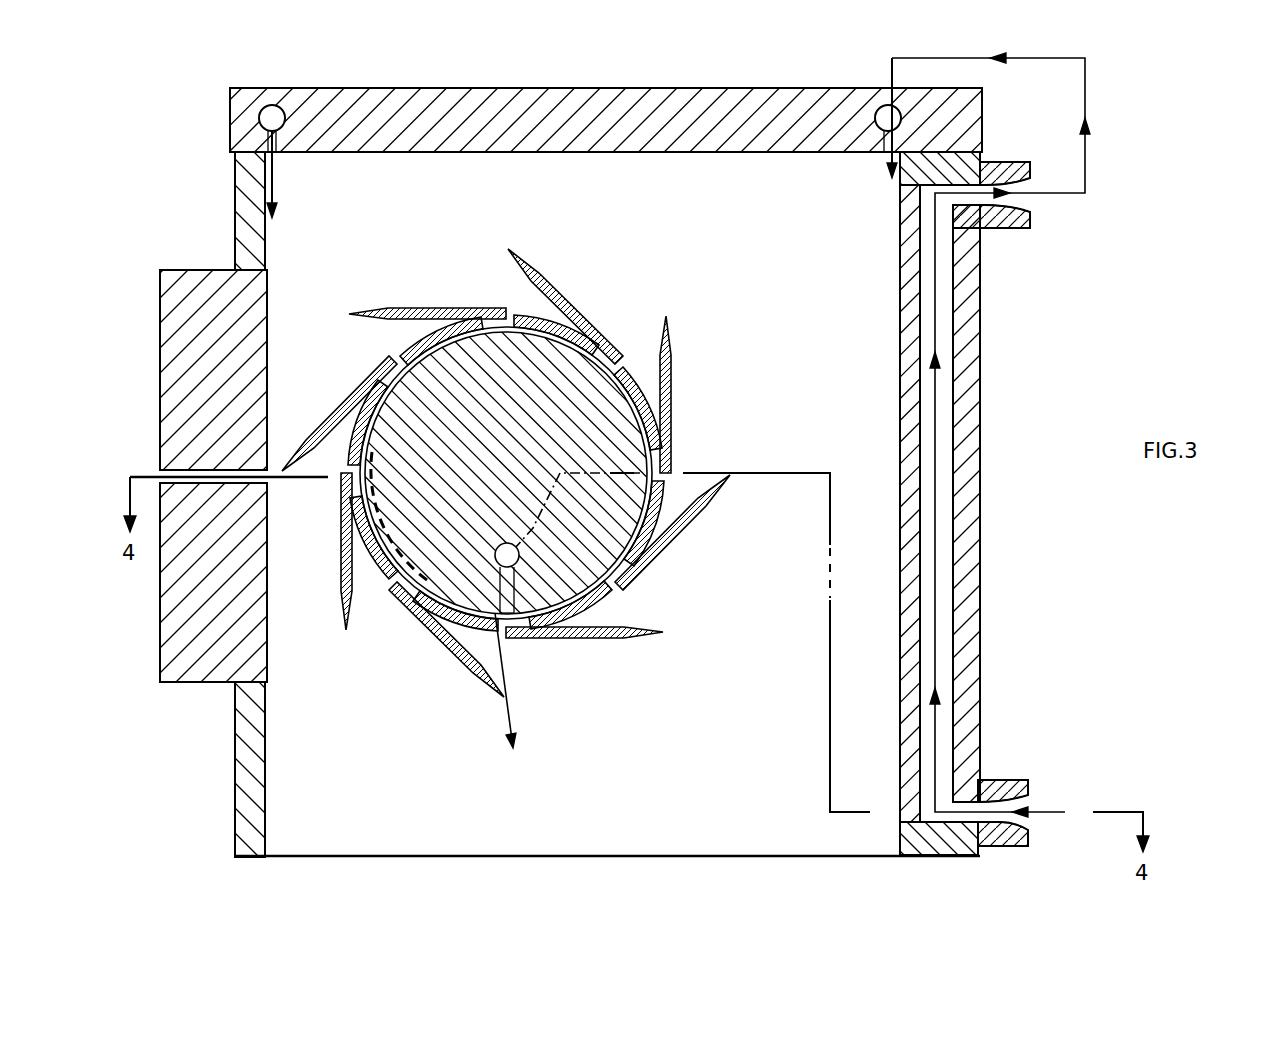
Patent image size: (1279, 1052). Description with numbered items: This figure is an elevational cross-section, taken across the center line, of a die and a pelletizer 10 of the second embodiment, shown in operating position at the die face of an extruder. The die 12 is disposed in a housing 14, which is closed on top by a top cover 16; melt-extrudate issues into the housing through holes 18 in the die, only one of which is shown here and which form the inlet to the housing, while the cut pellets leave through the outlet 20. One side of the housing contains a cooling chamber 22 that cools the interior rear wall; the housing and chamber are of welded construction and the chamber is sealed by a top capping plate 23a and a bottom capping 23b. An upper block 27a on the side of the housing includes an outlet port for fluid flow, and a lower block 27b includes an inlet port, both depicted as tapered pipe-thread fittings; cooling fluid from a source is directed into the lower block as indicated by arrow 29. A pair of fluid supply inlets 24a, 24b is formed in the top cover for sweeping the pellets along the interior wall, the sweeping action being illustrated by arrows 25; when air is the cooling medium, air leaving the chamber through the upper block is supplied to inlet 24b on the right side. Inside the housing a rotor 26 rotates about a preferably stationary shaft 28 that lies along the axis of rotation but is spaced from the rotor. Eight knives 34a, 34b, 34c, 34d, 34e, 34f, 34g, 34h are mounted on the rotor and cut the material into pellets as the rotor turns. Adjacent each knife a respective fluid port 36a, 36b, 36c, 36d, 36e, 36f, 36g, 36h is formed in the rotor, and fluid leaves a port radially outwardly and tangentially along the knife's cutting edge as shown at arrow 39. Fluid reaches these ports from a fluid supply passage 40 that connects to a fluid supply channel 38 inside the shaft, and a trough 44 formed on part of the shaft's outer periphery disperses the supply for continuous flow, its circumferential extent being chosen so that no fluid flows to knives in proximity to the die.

The pelletizer 10 is at (1203, 106).
The die 12 is at (175, 685).
The housing 14 is at (235, 185).
The top cover 16 is at (478, 88).
The holes 18 is at (165, 470).
The outlet 20 is at (478, 858).
The cooling chamber 22 is at (985, 505).
The top capping plate 23a is at (990, 165).
The bottom capping 23b is at (975, 852).
The fluid supply inlet 24a is at (272, 105).
The fluid supply inlet 24b is at (880, 108).
The arrows 25 is at (278, 170).
The rotor 26 is at (535, 410).
The block 27a is at (1000, 230).
The block 27b is at (1000, 780).
The shaft 28 is at (583, 340).
The arrow 29 is at (1060, 810).
The knife 34a is at (350, 625).
The knife 34b is at (480, 690).
The knife 34c is at (600, 640).
The knife 34d is at (670, 540).
The knife 34e is at (672, 360).
The knife 34f is at (530, 262).
The knife 34g is at (402, 308).
The knife 34h is at (350, 395).
The fluid port 36a is at (378, 580).
The fluid port 36b is at (525, 600).
The fluid port 36c is at (612, 593).
The fluid port 36d is at (660, 490).
The fluid port 36e is at (640, 372).
The fluid port 36f is at (530, 318).
The fluid port 36g is at (405, 365).
The fluid port 36h is at (345, 490).
The fluid supply channel 38 is at (530, 628).
The arrow 39 is at (510, 745).
The fluid supply passage 40 is at (495, 555).
The trough 44 is at (420, 590).